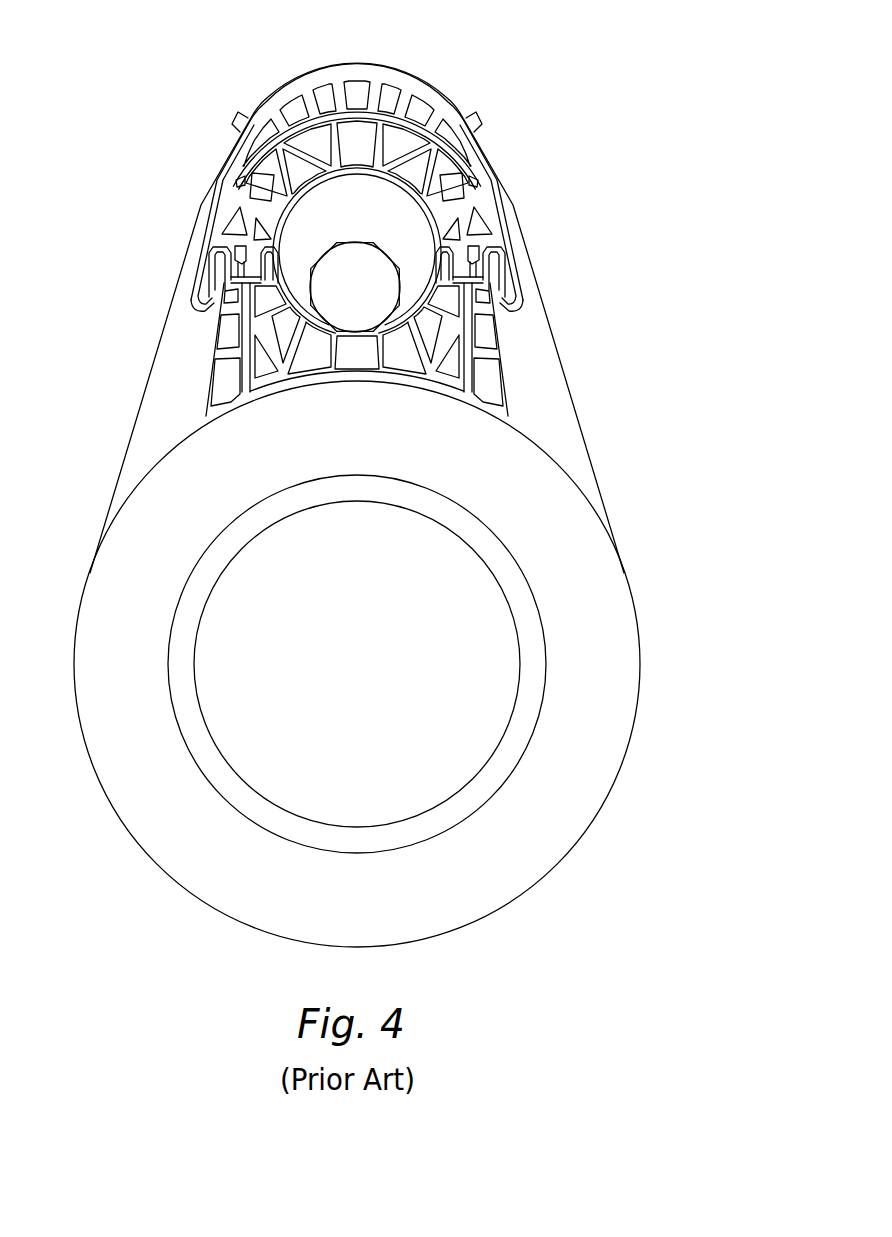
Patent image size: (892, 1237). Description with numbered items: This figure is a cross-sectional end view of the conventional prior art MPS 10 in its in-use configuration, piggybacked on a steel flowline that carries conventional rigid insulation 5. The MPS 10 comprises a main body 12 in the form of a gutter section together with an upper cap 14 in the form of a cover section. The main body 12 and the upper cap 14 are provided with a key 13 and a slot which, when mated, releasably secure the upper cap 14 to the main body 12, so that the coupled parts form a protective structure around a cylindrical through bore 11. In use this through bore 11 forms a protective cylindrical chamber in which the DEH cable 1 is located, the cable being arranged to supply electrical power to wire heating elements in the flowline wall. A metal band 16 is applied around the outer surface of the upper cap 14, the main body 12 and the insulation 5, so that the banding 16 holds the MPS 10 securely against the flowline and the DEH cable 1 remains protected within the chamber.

The DEH cable 1 is at (390, 262).
The rigid insulation 5 is at (560, 826).
The MPS 10 is at (540, 86).
The cylindrical through bore 11 is at (331, 200).
The main body 12 is at (503, 331).
The key 13 is at (533, 675).
The upper cap 14 is at (462, 118).
The metal band 16 is at (592, 466).